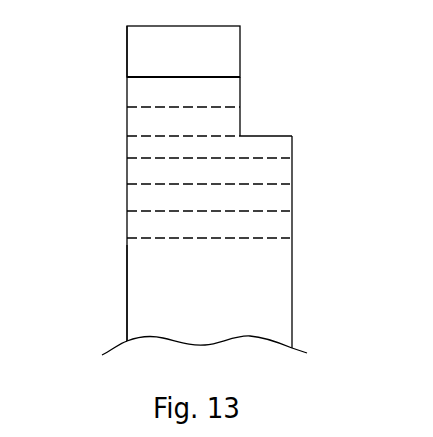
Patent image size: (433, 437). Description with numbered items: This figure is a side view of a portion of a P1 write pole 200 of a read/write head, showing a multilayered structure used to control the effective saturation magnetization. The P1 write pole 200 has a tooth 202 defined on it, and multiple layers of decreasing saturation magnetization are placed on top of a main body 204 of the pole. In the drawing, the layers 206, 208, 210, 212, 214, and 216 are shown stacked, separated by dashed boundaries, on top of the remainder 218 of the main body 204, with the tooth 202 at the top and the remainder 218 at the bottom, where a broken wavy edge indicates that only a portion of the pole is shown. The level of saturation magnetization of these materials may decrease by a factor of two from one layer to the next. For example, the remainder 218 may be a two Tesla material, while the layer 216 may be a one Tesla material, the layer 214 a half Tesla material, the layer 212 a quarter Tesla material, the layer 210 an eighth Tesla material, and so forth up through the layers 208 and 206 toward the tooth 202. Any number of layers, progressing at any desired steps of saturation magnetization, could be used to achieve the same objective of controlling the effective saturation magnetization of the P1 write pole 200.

The P1 write pole 200 is at (116, 166).
The tooth 202 is at (220, 52).
The main body 204 is at (303, 281).
The layer 206 is at (220, 100).
The layer 208 is at (223, 122).
The layer 210 is at (270, 150).
The layer 212 is at (256, 175).
The layer 214 is at (265, 200).
The layer 216 is at (271, 228).
The remainder of the main body 218 is at (270, 312).